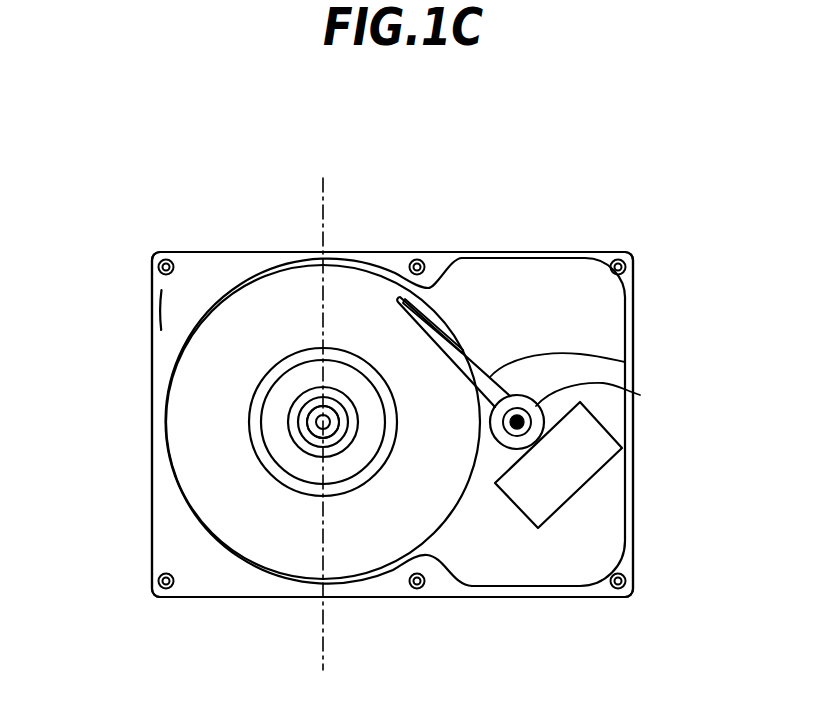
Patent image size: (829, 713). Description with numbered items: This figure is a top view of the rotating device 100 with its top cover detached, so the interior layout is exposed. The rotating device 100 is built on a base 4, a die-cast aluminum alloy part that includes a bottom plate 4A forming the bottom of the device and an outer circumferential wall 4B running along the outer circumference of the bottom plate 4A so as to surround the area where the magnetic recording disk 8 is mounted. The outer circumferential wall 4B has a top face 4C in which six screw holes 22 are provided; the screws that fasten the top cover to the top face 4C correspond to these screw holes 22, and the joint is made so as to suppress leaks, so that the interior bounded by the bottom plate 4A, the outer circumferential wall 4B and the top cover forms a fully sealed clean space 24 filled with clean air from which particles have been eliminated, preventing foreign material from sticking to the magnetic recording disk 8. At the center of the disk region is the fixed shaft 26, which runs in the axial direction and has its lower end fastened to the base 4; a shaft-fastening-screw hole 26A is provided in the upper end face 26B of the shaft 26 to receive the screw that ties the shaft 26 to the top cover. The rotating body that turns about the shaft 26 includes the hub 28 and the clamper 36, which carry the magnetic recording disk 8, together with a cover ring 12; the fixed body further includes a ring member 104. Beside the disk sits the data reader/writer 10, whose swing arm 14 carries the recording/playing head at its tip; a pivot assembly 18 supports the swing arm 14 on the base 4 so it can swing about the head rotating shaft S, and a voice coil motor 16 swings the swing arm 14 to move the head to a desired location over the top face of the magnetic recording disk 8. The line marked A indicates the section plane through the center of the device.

The rotating device 100 is at (418, 706).
The base 4 is at (640, 310).
The bottom plate 4A is at (478, 273).
The outer circumferential wall 4B is at (228, 270).
The top face 4C is at (158, 308).
The magnetic recording disk 8 is at (288, 270).
The data reader/writer 10 is at (572, 412).
The cover ring 12 is at (317, 437).
The swing arm 14 is at (625, 362).
The voice coil motor 16 is at (597, 465).
The pivot assembly 18 is at (640, 395).
The screw holes 22 is at (164, 257).
The clean space 24 is at (542, 275).
The shaft 26 is at (188, 424).
The upper end face 26B is at (311, 424).
The shaft-fastening-screw hole 26A is at (297, 443).
The hub 28 is at (283, 452).
The clamper 36 is at (343, 483).
The ring member 104 is at (310, 417).
The head rotating shaft S is at (517, 422).
The section line A- A is at (324, 424).